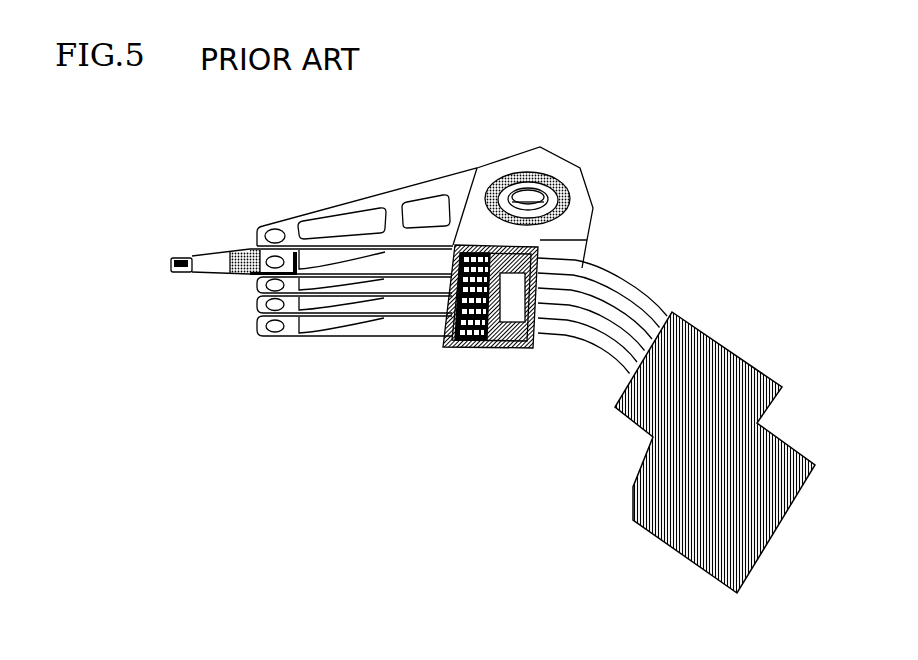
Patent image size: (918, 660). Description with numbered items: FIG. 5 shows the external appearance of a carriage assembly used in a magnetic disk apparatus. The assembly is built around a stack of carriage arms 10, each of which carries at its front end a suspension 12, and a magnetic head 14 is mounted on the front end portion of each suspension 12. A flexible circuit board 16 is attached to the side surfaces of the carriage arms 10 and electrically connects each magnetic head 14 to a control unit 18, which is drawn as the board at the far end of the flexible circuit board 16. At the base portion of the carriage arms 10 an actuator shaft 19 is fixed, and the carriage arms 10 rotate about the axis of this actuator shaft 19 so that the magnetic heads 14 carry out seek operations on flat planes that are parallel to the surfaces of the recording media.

The carriage arms 10 is at (392, 210).
The suspension 12 is at (223, 263).
The magnetic head 14 is at (183, 257).
The flexible circuit board 16 is at (603, 347).
The control unit 18 is at (745, 377).
The actuator shaft 19 is at (537, 193).